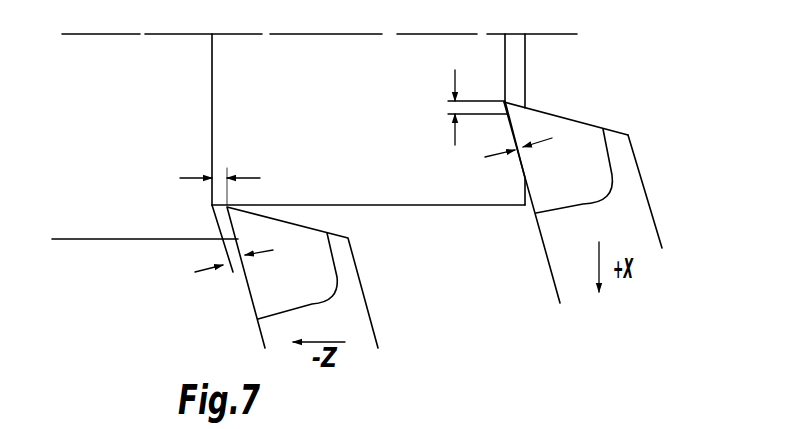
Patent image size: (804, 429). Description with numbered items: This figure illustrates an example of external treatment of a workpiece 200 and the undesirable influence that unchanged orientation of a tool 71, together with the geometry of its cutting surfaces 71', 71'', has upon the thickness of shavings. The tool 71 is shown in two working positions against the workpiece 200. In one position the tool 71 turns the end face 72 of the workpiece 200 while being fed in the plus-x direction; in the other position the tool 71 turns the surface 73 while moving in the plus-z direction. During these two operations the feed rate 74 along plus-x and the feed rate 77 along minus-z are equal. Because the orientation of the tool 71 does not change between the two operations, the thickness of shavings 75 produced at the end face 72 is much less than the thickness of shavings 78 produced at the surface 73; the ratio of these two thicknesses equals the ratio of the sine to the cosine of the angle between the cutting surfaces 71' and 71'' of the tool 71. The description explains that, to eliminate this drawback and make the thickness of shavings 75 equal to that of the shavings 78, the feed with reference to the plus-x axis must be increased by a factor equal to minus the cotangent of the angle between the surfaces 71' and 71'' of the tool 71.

The workpiece 200 is at (330, 120).
The tool 71 is at (455, 225).
The cutting surface 71' is at (435, 224).
The cutting surface 71'' is at (566, 109).
The end face 72 is at (510, 60).
The surface 73 is at (430, 206).
The feed rate 74 is at (452, 108).
The thickness of shavings 75 is at (517, 153).
The feed rate 77 is at (220, 173).
The thickness of shavings 78 is at (234, 279).